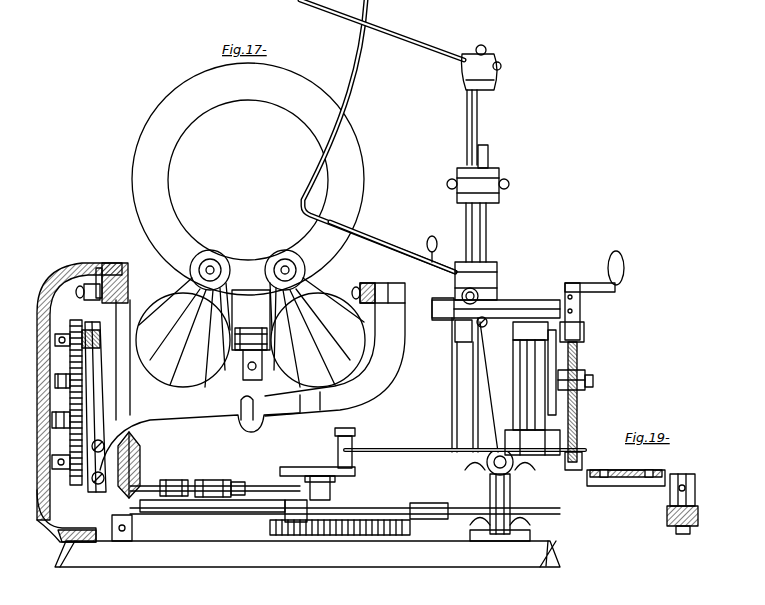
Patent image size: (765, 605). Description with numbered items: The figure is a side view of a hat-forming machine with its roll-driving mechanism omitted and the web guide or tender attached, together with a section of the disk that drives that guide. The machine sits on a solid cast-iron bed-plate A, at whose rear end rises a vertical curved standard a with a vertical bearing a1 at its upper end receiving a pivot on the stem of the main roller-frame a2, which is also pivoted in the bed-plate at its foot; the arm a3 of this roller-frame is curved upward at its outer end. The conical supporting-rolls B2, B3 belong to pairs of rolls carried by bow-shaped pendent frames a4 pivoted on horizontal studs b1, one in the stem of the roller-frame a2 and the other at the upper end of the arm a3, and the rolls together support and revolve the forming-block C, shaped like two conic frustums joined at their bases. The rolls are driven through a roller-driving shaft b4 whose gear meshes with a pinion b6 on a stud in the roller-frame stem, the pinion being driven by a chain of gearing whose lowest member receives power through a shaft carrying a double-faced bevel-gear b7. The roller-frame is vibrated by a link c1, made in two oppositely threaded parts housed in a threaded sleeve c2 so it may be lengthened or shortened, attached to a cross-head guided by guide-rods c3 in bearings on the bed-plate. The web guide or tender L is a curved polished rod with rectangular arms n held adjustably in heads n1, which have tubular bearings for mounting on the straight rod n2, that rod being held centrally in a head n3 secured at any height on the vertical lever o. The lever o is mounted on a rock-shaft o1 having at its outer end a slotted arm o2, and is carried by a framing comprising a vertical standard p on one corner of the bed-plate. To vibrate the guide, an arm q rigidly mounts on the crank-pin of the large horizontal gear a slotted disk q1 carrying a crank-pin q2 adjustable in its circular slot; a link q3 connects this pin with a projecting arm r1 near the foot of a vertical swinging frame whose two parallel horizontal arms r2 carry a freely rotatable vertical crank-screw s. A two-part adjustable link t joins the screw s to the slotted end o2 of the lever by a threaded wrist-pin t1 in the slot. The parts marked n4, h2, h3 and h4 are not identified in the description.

In FIG. 17, the bed-plate A is at (307, 554).
In FIG. 17, the vertical curved standard a is at (74, 402).
In FIG. 17, the vertical bearing a1 is at (112, 273).
In FIG. 17, the main roller-frame a2 is at (94, 462).
In FIG. 17, the arm of the roller-frame a3 is at (308, 361).
In FIG. 17, the pendent frame a4 is at (352, 342).
In FIG. 17, the horizontal studs b1 is at (80, 296).
In FIG. 17, the roller-driving shaft b4 is at (70, 340).
In FIG. 17, the pinion b6 is at (72, 368).
In FIG. 17, the double-faced bevel-gear b7 is at (146, 438).
In FIG. 17, the conical supporting-roll B2 is at (183, 318).
In FIG. 17, the conical supporting-roll B3 is at (315, 318).
In FIG. 17, the forming-block C is at (248, 179).
In FIG. 17, the link c1 is at (215, 481).
In FIG. 17, the threaded sleeve c2 is at (220, 480).
In FIG. 17, the guide-rods c3 is at (336, 516).
In FIG. 17, the web guide or tender L is at (379, 136).
In FIG. 17, the rectangular arms n is at (382, 136).
In FIG. 17, the heads n1 is at (482, 67).
In FIG. 17, the straight rod n2 is at (464, 127).
In FIG. 17, the central head n3 is at (499, 180).
In FIG. 17, the fitting n4 is at (476, 283).
In FIG. 17, the vertical lever o is at (482, 232).
In FIG. 17, the rock-shaft o1 is at (540, 302).
In FIG. 17, the slotted arm o2 is at (548, 372).
In FIG. 17, the block h2 is at (455, 336).
In FIG. 17, the bar h3 is at (496, 309).
In FIG. 17, the screw h4 is at (437, 246).
In FIG. 17, the vertical standard p is at (475, 385).
In FIG. 17, the arm q is at (330, 488).
In FIG. 19, the arm q is at (674, 476).
In FIG. 17, the slotted disk q1 is at (317, 463).
In FIG. 19, the slotted disk q1 is at (626, 469).
In FIG. 17, the crank-pin q2 is at (352, 440).
In FIG. 17, the link q3 is at (465, 441).
In FIG. 17, the projecting arm r1 is at (532, 437).
In FIG. 17, the horizontal arms r2 is at (582, 458).
In FIG. 17, the vertical crank-screw s is at (575, 402).
In FIG. 17, the link t is at (580, 372).
In FIG. 17, the threaded wrist-pin t1 is at (594, 381).